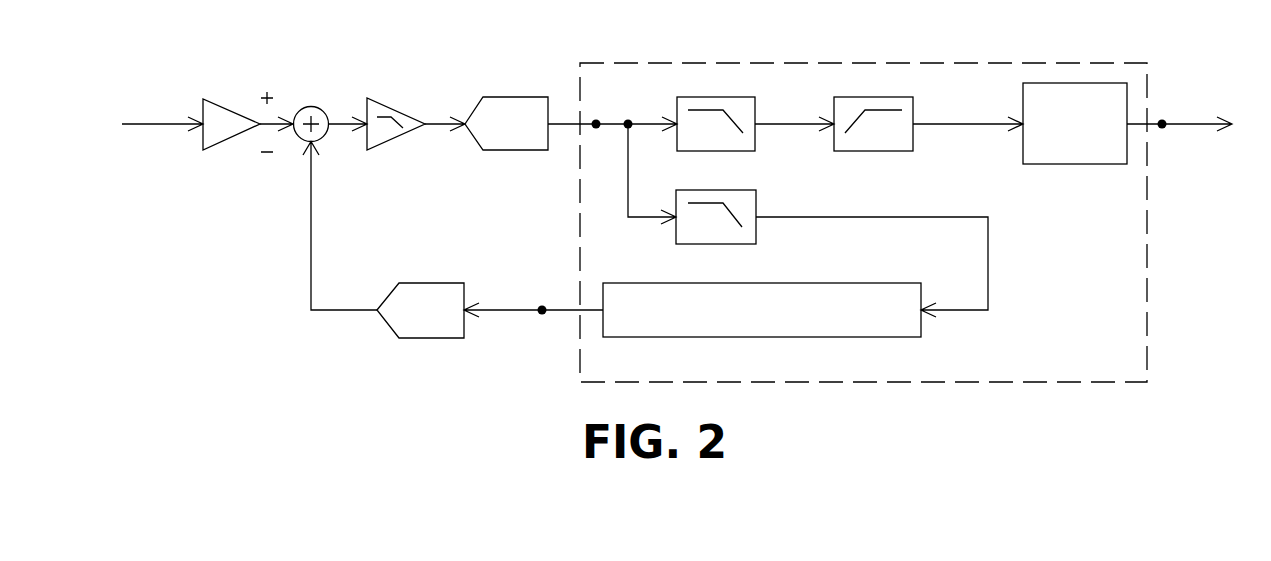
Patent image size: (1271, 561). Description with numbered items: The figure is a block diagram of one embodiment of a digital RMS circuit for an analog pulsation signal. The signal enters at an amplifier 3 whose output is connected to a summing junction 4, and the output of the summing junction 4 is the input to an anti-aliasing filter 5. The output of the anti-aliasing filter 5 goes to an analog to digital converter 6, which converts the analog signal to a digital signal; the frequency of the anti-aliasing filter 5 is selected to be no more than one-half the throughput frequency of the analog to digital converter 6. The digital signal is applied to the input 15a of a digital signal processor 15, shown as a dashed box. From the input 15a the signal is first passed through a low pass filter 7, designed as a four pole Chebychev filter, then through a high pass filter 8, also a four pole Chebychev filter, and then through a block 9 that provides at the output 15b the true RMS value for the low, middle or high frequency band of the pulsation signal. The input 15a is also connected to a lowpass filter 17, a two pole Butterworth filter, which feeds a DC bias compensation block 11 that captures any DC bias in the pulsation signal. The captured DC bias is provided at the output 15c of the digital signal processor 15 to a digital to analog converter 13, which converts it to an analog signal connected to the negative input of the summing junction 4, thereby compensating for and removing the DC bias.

The amplifier 3 is at (213, 99).
The summing junction 4 is at (311, 106).
The anti-aliasing filter 5 is at (380, 98).
The analog to digital converter 6 is at (505, 97).
The low pass filter 7 is at (710, 97).
The high pass filter 8 is at (873, 97).
The block 9 is at (1042, 164).
The DC bias compensation block 11 is at (830, 337).
The digital to analog converter 13 is at (435, 338).
The digital signal processor 15 is at (832, 263).
The input of digital signal processor 15a is at (596, 123).
The output of digital signal processor 15b is at (1162, 124).
The output of digital signal processor 15c is at (542, 310).
The lowpass filter 17 is at (687, 244).